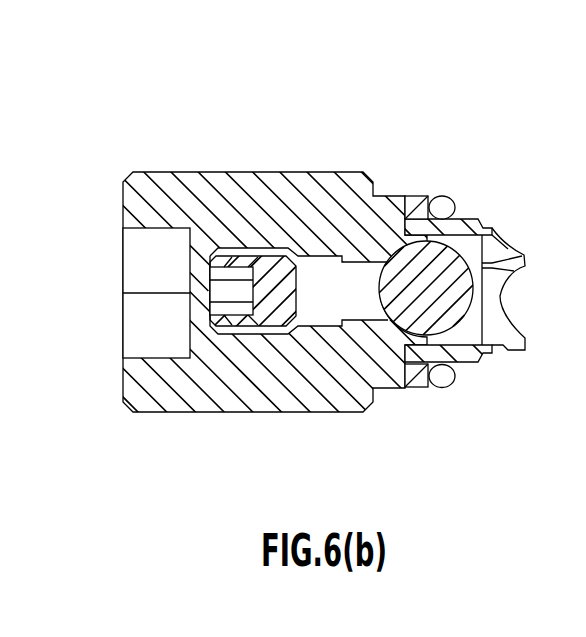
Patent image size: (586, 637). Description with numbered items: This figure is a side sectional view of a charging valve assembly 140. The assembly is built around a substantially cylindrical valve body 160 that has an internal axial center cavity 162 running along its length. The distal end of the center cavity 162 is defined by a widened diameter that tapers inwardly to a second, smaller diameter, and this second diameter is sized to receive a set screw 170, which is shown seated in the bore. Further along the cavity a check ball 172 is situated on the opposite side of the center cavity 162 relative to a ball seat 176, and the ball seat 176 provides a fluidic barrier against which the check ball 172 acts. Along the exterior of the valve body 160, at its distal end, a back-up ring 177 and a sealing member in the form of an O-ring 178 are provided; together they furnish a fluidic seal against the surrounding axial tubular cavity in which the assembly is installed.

The charging valve assembly 140 is at (82, 44).
The valve body 160 is at (147, 173).
The center cavity 162 is at (167, 252).
The set screw 170 is at (270, 262).
The check ball 172 is at (419, 272).
The ball seat 176 is at (437, 337).
The back-up ring 177 is at (418, 197).
The O-ring 178 is at (457, 197).